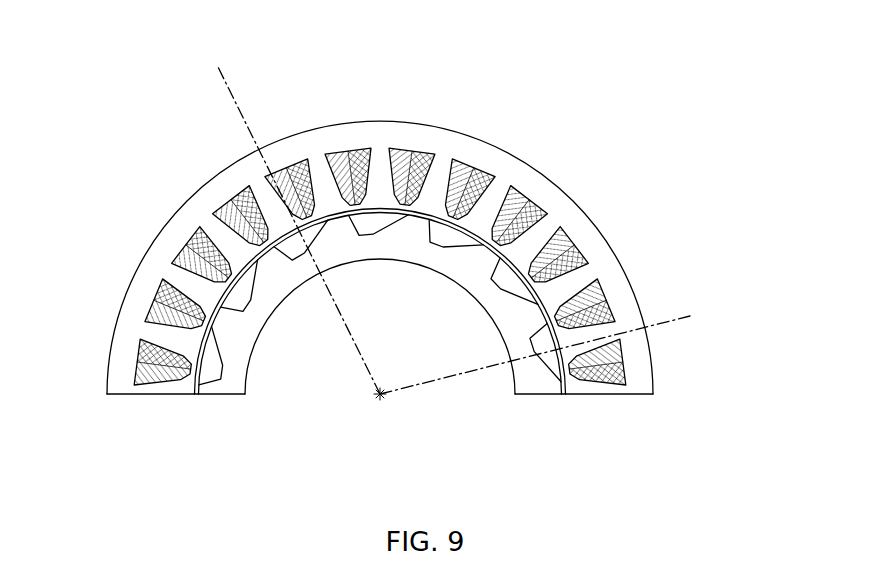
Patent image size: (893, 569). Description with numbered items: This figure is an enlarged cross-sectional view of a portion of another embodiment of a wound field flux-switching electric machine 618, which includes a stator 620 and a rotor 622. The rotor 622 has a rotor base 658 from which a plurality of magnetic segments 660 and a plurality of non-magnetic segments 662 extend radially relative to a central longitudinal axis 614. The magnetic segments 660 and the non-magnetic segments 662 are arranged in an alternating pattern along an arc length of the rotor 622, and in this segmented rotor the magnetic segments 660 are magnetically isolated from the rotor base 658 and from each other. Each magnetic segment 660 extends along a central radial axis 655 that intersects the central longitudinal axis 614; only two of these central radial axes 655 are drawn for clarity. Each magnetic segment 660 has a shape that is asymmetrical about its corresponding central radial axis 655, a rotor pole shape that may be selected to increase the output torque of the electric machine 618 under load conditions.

The electric machine 618 is at (602, 71).
The stator 620 is at (590, 213).
The rotor 622 is at (462, 293).
The central longitudinal axis 614 is at (380, 398).
The central radial axes 655 is at (355, 345).
The rotor base 658 is at (355, 258).
The magnetic segments 660 is at (327, 200).
The non-magnetic segments 662 is at (270, 205).